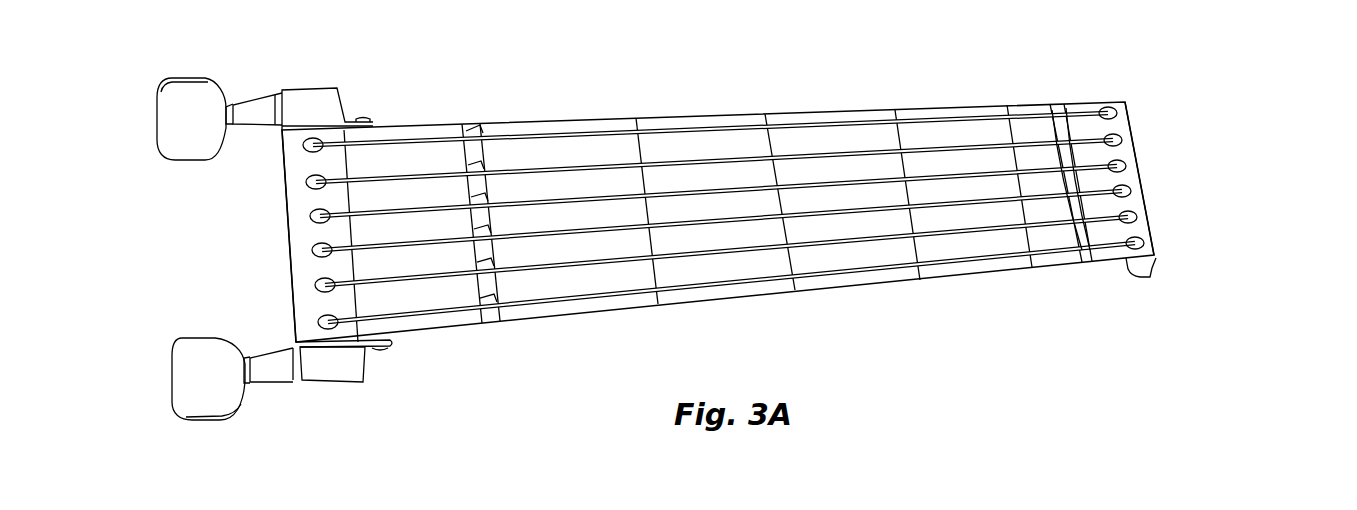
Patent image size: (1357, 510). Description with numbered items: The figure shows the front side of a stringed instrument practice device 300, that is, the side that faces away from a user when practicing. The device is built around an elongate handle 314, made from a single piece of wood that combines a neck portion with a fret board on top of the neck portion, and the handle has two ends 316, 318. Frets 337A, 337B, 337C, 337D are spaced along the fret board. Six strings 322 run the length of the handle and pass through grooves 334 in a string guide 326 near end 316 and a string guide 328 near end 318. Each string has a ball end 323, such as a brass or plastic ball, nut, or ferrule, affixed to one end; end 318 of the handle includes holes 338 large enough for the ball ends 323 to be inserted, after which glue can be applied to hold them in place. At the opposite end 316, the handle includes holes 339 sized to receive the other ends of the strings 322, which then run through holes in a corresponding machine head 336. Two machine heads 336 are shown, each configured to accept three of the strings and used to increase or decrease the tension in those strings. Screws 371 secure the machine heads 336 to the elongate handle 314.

The stringed instrument practice device 300 is at (1254, 120).
The elongate handle 314 is at (718, 117).
The end 316 is at (294, 329).
The end 318 is at (1127, 102).
The strings 322 is at (630, 296).
The ball end 323 is at (1120, 114).
The string guide 326 is at (492, 323).
The string guide 328 is at (1087, 263).
The grooves 334 is at (482, 127).
The machine heads 336 is at (170, 147).
The fret 337A is at (658, 305).
The fret 337B is at (797, 292).
The fret 337C is at (921, 280).
The fret 337D is at (1032, 268).
The holes 338 is at (1145, 278).
The holes 339 is at (303, 147).
The screws 371 is at (385, 378).